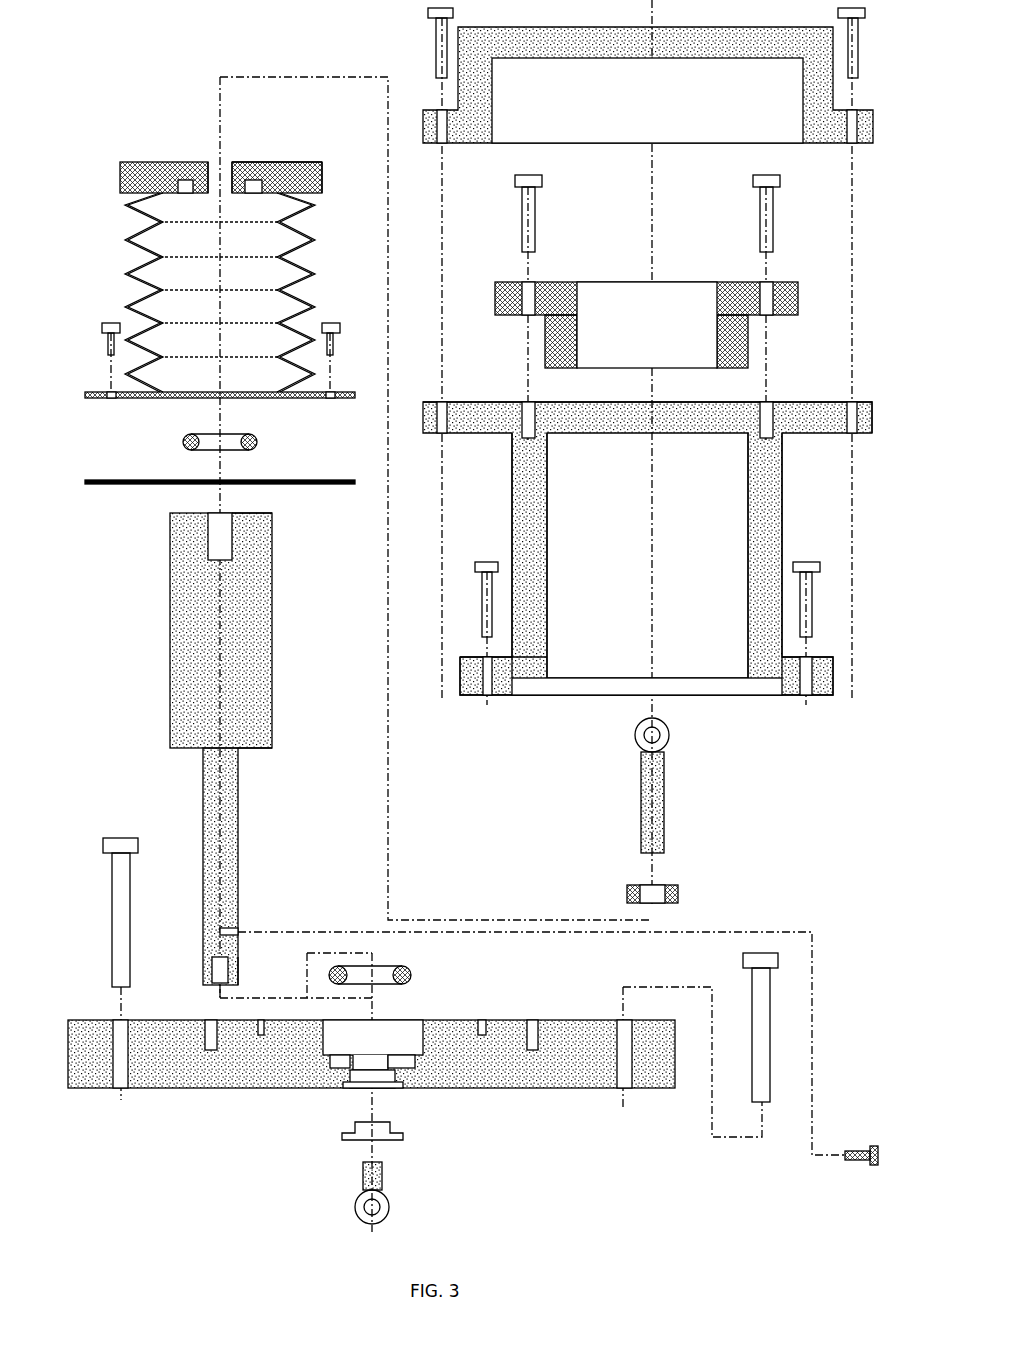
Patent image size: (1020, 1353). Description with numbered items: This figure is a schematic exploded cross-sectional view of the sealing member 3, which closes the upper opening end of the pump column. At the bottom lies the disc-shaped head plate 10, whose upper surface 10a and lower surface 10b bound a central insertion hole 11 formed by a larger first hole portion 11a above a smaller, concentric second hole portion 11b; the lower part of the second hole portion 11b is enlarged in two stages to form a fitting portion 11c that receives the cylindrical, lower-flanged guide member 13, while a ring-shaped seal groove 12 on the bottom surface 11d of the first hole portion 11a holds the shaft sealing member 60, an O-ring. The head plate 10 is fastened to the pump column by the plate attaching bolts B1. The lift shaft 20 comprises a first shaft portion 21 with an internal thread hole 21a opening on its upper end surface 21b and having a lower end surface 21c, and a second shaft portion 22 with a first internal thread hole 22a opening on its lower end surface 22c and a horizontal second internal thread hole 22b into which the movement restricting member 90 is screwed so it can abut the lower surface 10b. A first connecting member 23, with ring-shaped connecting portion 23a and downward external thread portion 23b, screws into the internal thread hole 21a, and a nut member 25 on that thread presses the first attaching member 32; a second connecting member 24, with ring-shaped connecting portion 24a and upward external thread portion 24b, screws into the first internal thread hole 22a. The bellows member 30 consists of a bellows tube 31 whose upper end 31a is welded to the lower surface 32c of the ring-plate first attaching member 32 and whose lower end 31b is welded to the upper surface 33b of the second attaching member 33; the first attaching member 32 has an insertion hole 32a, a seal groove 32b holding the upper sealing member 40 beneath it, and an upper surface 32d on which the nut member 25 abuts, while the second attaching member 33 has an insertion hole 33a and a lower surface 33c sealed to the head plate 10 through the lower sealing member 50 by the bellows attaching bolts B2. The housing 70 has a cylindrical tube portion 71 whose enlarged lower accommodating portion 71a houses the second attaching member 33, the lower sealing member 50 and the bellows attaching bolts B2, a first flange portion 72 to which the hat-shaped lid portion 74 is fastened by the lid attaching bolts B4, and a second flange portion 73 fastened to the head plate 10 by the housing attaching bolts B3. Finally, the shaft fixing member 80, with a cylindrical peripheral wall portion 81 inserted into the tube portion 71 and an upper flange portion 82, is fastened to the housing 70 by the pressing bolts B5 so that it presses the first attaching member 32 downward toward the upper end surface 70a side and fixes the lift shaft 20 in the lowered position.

The sealing member 3 is at (112, 32).
The head plate 10 is at (371, 1078).
The upper surface 10a is at (555, 1020).
The lower surface 10b is at (558, 1090).
The insertion hole 11 is at (383, 1048).
The first hole portion 11a is at (410, 1040).
The second hole portion 11b is at (423, 1025).
The fitting portion 11c is at (400, 1090).
The bottom surface 11d is at (340, 1060).
The seal groove 12 is at (345, 1075).
The guide member 13 is at (405, 1135).
The lift shaft 20 is at (421, 869).
The first shaft portion 21 is at (228, 645).
The internal thread hole 21a is at (215, 516).
The upper end surface 21b is at (255, 513).
The lower end surface 21c is at (248, 752).
The second shaft portion 22 is at (237, 870).
The first internal thread hole 22a is at (212, 984).
The second internal thread hole 22b is at (238, 931).
The lower end surface 22c is at (240, 984).
The first connecting member 23 is at (711, 785).
The connecting portion 23a is at (670, 735).
The external thread portion 23b is at (665, 790).
The second connecting member 24 is at (441, 1197).
The connecting portion 24a is at (392, 1208).
The external thread portion 24b is at (383, 1175).
The nut member 25 is at (680, 890).
The bellows member 30 is at (218, 281).
The bellows tube 31 is at (192, 313).
The upper end 31a is at (135, 205).
The lower end 31b is at (185, 400).
The first attaching member 32 is at (246, 172).
The insertion hole 32a is at (210, 165).
The seal groove 32b is at (183, 182).
The lower surface 32c is at (312, 200).
The upper surface 32d is at (305, 160).
The second attaching member 33 is at (224, 395).
The insertion hole 33a is at (250, 400).
The upper surface 33b is at (335, 391).
The lower surface 33c is at (345, 400).
The upper sealing member 40 is at (264, 449).
The lower sealing member 50 is at (90, 487).
The shaft sealing member 60 is at (412, 974).
The housing 70 is at (651, 383).
The upper end surface 70a is at (520, 403).
The tube portion 71 is at (520, 540).
The accommodating portion 71a is at (560, 692).
The first flange portion 72 is at (460, 445).
The second flange portion 73 is at (468, 670).
The lid portion 74 is at (630, 60).
The shaft fixing member 80 is at (667, 310).
The peripheral wall portion 81 is at (567, 330).
The flange portion 82 is at (785, 290).
The movement restricting member 90 is at (840, 1163).
The plate attaching bolts B1 is at (120, 838).
The bellows attaching bolts B2 is at (103, 326).
The housing attaching bolts B3 is at (478, 600).
The lid attaching bolts B4 is at (432, 40).
The pressing bolts B5 is at (520, 200).